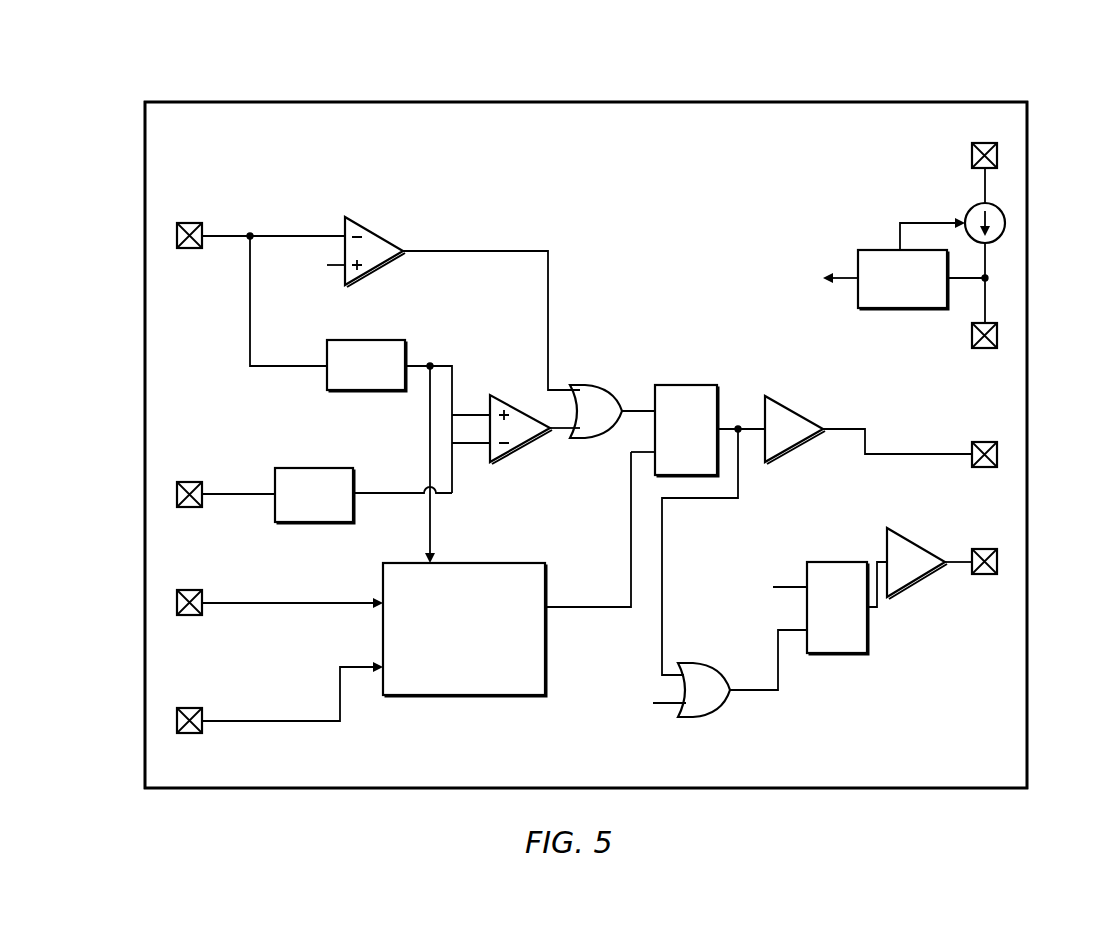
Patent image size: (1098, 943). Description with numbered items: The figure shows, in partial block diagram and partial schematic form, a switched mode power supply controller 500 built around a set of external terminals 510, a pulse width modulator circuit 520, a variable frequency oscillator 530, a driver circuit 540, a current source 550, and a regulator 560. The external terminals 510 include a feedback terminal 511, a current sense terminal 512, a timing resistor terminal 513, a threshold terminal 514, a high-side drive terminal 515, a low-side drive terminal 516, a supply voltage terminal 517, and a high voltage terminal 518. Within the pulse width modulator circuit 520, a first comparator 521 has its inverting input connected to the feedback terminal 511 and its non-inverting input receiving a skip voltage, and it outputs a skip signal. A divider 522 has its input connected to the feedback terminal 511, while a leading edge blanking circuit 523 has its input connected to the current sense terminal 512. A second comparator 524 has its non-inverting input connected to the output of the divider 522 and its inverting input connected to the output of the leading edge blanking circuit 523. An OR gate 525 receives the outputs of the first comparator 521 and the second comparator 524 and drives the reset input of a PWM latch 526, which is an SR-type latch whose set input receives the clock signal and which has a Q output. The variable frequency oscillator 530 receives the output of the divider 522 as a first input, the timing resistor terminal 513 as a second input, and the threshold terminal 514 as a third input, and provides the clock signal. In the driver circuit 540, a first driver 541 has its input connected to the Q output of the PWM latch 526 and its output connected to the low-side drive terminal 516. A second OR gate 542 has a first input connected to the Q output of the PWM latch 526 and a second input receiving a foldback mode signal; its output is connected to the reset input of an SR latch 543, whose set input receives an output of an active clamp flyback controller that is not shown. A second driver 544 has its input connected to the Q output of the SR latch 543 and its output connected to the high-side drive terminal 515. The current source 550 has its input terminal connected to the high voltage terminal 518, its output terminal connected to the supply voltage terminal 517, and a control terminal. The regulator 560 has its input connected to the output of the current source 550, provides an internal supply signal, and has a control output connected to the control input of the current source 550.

The switched mode power supply controller 500 is at (253, 100).
The external terminals 510 is at (178, 186).
The FB terminal 511 is at (187, 248).
The CS terminal 512 is at (190, 507).
The RT terminal 513 is at (190, 615).
The ATH terminal 514 is at (190, 733).
The HDRV terminal 515 is at (983, 575).
The LDRV terminal 516 is at (970, 466).
The VCC terminal 517 is at (970, 340).
The HV terminal 518 is at (972, 158).
The pulse width modulator circuit 520 is at (284, 219).
The comparator 521 is at (400, 207).
The divider 522 is at (360, 340).
The leading edge blanking circuit 523 is at (305, 468).
The comparator 524 is at (497, 395).
The OR gate 525 is at (580, 383).
The PWM latch 526 is at (692, 385).
The variable frequency oscillator 530 is at (478, 563).
The driver circuit 540 is at (744, 378).
The driver 541 is at (783, 400).
The OR gate 542 is at (718, 708).
The SR latch 543 is at (845, 653).
The driver 544 is at (913, 585).
The current source 550 is at (965, 210).
The regulator 560 is at (875, 250).